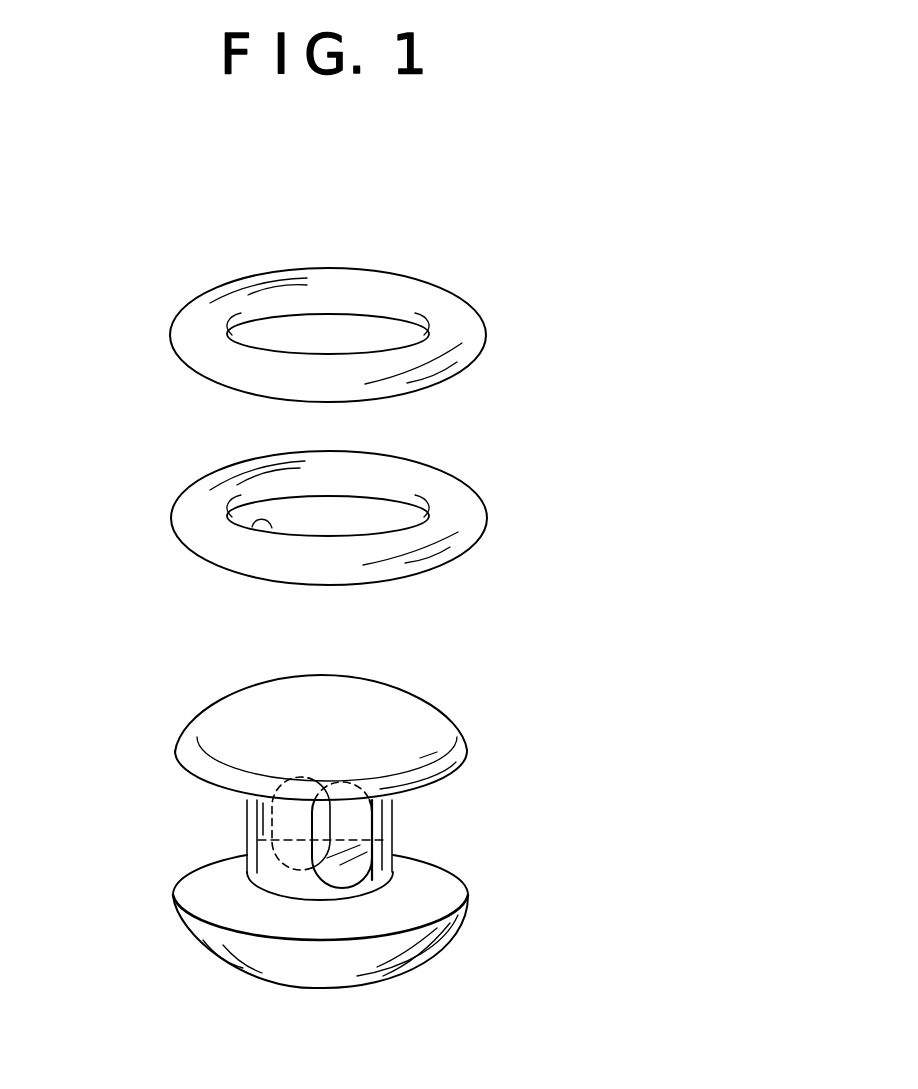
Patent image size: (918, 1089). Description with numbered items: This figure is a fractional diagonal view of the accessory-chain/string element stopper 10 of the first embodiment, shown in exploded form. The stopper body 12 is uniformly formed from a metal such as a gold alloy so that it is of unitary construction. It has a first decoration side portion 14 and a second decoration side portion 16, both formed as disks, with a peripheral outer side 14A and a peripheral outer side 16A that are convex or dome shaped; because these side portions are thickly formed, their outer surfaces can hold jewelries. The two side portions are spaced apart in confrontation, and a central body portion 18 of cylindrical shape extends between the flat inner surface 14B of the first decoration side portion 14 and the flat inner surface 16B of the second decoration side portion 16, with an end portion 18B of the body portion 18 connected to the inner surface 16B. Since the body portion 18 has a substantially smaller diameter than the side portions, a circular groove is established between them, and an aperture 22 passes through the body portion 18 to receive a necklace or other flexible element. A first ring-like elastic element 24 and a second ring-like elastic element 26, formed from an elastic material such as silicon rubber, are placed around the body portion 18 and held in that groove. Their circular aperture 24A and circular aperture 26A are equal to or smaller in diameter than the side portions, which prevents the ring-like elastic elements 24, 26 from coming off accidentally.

The accessory-chain/string element stopper 10 is at (642, 285).
The stopper body 12 is at (543, 732).
The first decoration side portion 14 is at (460, 730).
The peripheral outer side 14A is at (410, 708).
The flat inner surface 14B is at (452, 772).
The second decoration side portion 16 is at (412, 968).
The peripheral outer side 16A is at (347, 970).
The flat inner surface 16B is at (292, 925).
The central body portion 18 is at (245, 818).
The end portion 18B is at (193, 873).
The aperture 22 is at (350, 833).
The first ring-like elastic element 24 is at (487, 323).
The circular aperture 24A is at (398, 288).
The second ring-like elastic element 26 is at (487, 493).
The circular aperture 26A is at (257, 527).